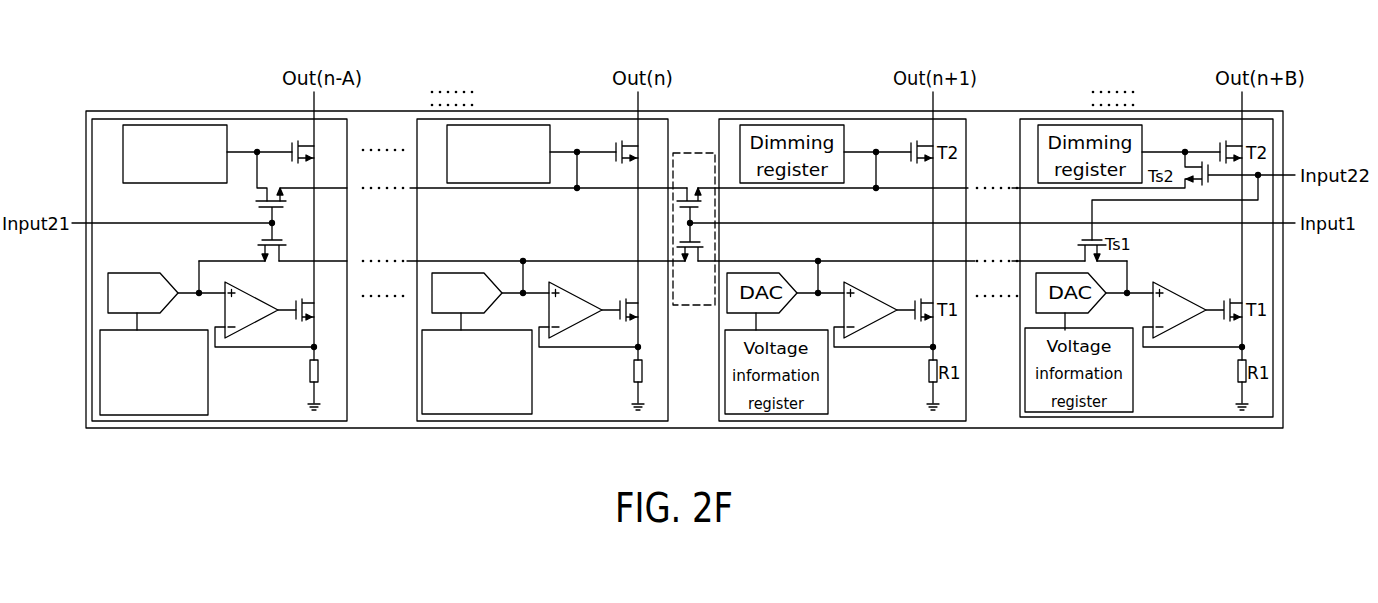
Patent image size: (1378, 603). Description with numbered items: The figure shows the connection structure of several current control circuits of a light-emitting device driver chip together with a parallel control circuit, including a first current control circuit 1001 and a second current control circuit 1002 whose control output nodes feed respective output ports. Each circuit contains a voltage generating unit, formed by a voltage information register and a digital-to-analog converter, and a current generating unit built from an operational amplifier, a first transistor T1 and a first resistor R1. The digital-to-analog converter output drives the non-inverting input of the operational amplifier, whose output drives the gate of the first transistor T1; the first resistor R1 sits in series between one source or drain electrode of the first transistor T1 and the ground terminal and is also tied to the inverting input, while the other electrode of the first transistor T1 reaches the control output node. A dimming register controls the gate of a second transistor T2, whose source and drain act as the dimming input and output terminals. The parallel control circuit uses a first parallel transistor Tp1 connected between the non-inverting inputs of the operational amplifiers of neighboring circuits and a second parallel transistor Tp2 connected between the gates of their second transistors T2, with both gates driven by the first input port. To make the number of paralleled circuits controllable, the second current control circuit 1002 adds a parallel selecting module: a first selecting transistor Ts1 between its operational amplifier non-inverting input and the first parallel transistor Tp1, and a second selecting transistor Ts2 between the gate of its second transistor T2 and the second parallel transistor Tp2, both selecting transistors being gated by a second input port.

The first current control circuit 1001 is at (538, 421).
The second current control circuit 1002 is at (209, 286).
The first transistor T1 is at (317, 310).
The second transistor T2 is at (315, 152).
The first selecting transistor Ts1 is at (270, 257).
The second selecting transistor Ts2 is at (301, 187).
The first parallel transistor Tp1 is at (690, 255).
The second parallel transistor Tp2 is at (690, 194).
The first resistor R1 is at (326, 371).